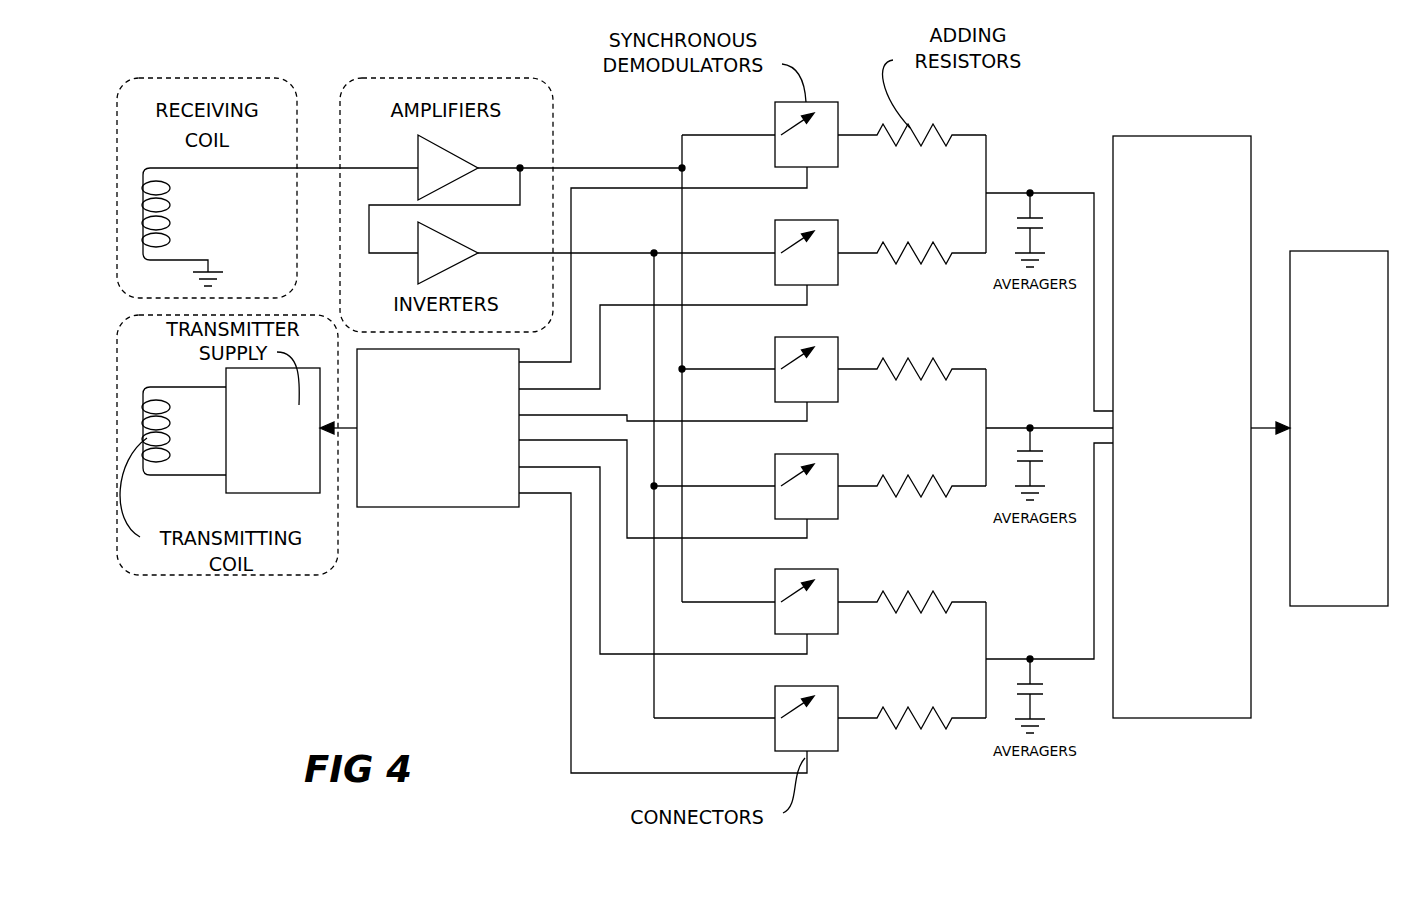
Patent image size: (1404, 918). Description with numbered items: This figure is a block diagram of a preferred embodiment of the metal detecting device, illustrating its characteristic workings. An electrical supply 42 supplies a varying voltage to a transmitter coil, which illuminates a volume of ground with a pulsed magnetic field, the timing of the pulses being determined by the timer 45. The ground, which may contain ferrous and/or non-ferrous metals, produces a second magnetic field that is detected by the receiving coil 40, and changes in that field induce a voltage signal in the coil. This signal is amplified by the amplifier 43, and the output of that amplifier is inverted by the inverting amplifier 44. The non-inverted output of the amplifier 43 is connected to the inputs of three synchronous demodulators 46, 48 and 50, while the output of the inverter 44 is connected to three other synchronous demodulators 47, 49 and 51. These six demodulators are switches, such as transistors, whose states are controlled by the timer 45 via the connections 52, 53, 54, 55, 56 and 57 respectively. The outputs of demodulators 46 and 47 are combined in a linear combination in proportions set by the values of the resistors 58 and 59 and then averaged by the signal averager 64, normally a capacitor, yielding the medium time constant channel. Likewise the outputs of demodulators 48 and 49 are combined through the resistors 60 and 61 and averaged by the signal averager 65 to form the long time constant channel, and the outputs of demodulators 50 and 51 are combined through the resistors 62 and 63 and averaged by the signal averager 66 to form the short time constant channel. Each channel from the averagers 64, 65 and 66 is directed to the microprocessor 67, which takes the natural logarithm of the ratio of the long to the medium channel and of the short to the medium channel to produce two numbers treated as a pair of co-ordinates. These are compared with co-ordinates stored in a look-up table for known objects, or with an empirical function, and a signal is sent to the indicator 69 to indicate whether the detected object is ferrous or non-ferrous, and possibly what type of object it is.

The receiving coil 40 is at (170, 207).
The electrical supply 42 is at (273, 430).
The amplifier 43 is at (448, 167).
The inverting amplifier 44 is at (448, 253).
The timer 45 is at (438, 428).
The synchronous demodulator 46 is at (787, 125).
The synchronous demodulator 47 is at (787, 243).
The synchronous demodulator 48 is at (787, 359).
The synchronous demodulator 49 is at (787, 476).
The synchronous demodulator 50 is at (787, 592).
The synchronous demodulator 51 is at (787, 708).
The connection 52 is at (684, 264).
The connection 53 is at (684, 337).
The connection 54 is at (684, 419).
The connection 55 is at (684, 496).
The connection 56 is at (684, 568).
The connection 57 is at (684, 640).
The resistor 58 is at (912, 150).
The resistor 59 is at (912, 268).
The resistor 60 is at (912, 384).
The resistor 61 is at (912, 501).
The resistor 62 is at (912, 617).
The resistor 63 is at (912, 733).
The signal averager 64 is at (1046, 228).
The signal averager 65 is at (1045, 462).
The signal averager 66 is at (1045, 694).
The microprocessor 67 is at (1182, 427).
The indicator 69 is at (1339, 428).